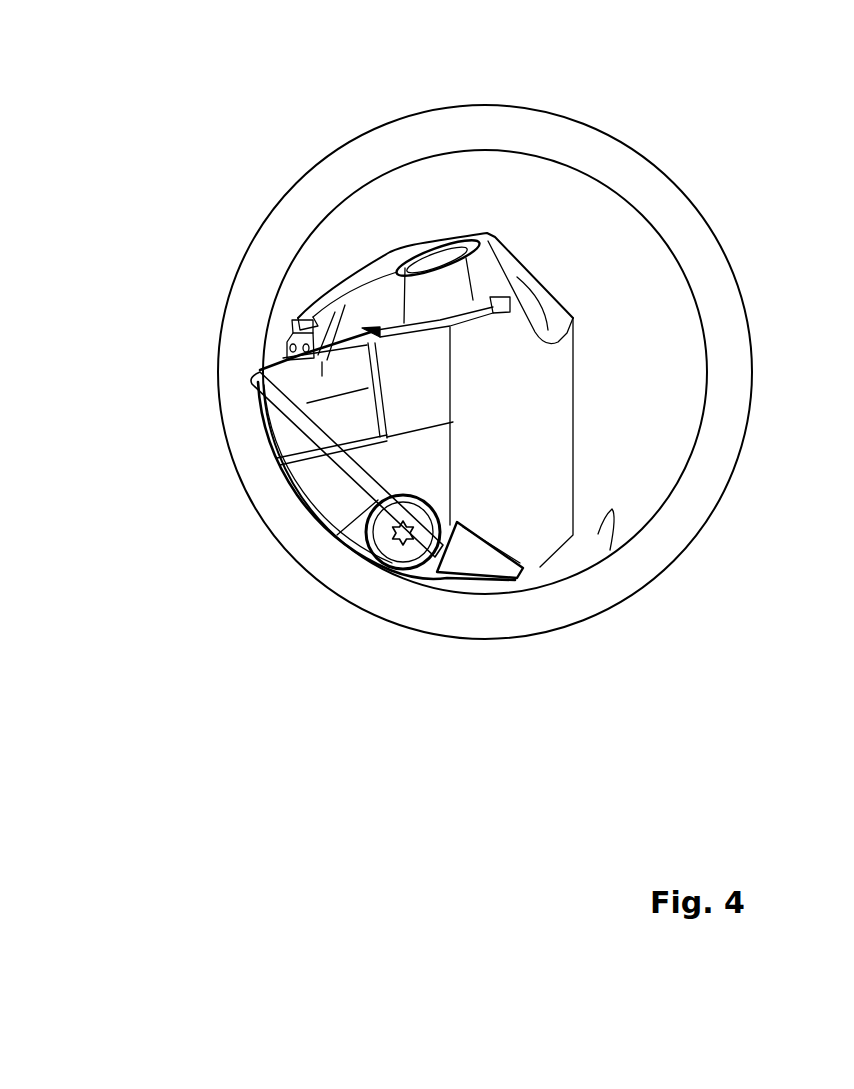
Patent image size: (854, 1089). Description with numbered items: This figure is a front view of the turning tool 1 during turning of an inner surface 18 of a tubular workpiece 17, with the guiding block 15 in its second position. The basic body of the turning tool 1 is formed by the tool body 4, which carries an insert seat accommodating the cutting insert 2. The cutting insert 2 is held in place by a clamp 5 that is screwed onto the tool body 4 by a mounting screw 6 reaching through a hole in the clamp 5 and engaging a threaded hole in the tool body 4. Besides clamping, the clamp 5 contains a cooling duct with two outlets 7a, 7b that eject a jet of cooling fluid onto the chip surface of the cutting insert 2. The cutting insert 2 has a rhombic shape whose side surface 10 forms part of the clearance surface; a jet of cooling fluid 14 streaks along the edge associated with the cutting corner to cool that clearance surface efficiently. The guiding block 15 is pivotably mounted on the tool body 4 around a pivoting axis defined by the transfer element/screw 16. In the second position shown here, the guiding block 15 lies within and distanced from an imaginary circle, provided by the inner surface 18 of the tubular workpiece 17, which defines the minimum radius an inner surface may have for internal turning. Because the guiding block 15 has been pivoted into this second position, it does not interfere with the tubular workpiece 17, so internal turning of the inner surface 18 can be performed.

The turning tool 1 is at (578, 304).
The cutting insert 2 is at (287, 348).
The tool body 4 is at (557, 444).
The clamp 5 is at (390, 252).
The mounting screw 6 is at (468, 243).
The outlet 7a is at (290, 344).
The outlet 7b is at (270, 367).
The side surface 10 is at (343, 452).
The jet of cooling fluid 14 is at (307, 367).
The guiding block 15 is at (476, 556).
The transfer element/screw 16 is at (393, 552).
The tubular workpiece 17 is at (723, 391).
The inner surface 18 is at (613, 510).